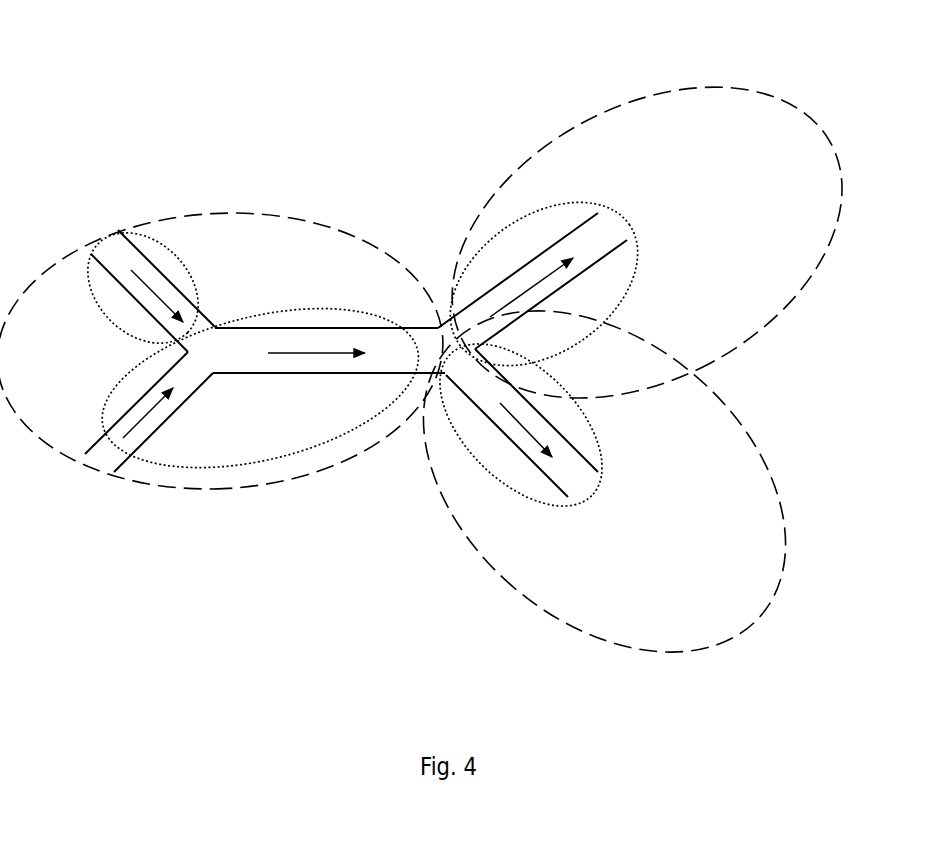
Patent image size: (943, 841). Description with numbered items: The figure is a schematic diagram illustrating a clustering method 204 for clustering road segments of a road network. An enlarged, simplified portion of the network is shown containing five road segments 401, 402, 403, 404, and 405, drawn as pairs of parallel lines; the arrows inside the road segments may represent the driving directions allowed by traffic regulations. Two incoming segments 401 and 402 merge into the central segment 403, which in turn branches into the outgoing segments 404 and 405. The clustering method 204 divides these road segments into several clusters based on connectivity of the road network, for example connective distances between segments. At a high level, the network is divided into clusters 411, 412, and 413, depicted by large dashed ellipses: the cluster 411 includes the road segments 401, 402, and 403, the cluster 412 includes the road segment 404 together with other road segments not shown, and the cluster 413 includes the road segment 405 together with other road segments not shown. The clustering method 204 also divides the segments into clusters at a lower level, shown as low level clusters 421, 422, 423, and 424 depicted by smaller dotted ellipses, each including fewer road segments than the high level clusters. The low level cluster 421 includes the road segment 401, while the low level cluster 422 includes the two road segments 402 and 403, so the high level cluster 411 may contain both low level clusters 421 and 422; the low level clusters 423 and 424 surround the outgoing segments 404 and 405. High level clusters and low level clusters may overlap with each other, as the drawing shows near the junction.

The clustering method 204 is at (118, 85).
The road segment 401 is at (165, 277).
The road segment 402 is at (177, 410).
The road segment 403 is at (323, 328).
The road segment 404 is at (608, 255).
The road segment 405 is at (563, 438).
The cluster 411 is at (267, 213).
The cluster 412 is at (753, 88).
The cluster 413 is at (753, 442).
The low level cluster 421 is at (105, 312).
The low level cluster 422 is at (267, 313).
The low level cluster 423 is at (618, 210).
The low level cluster 424 is at (566, 507).